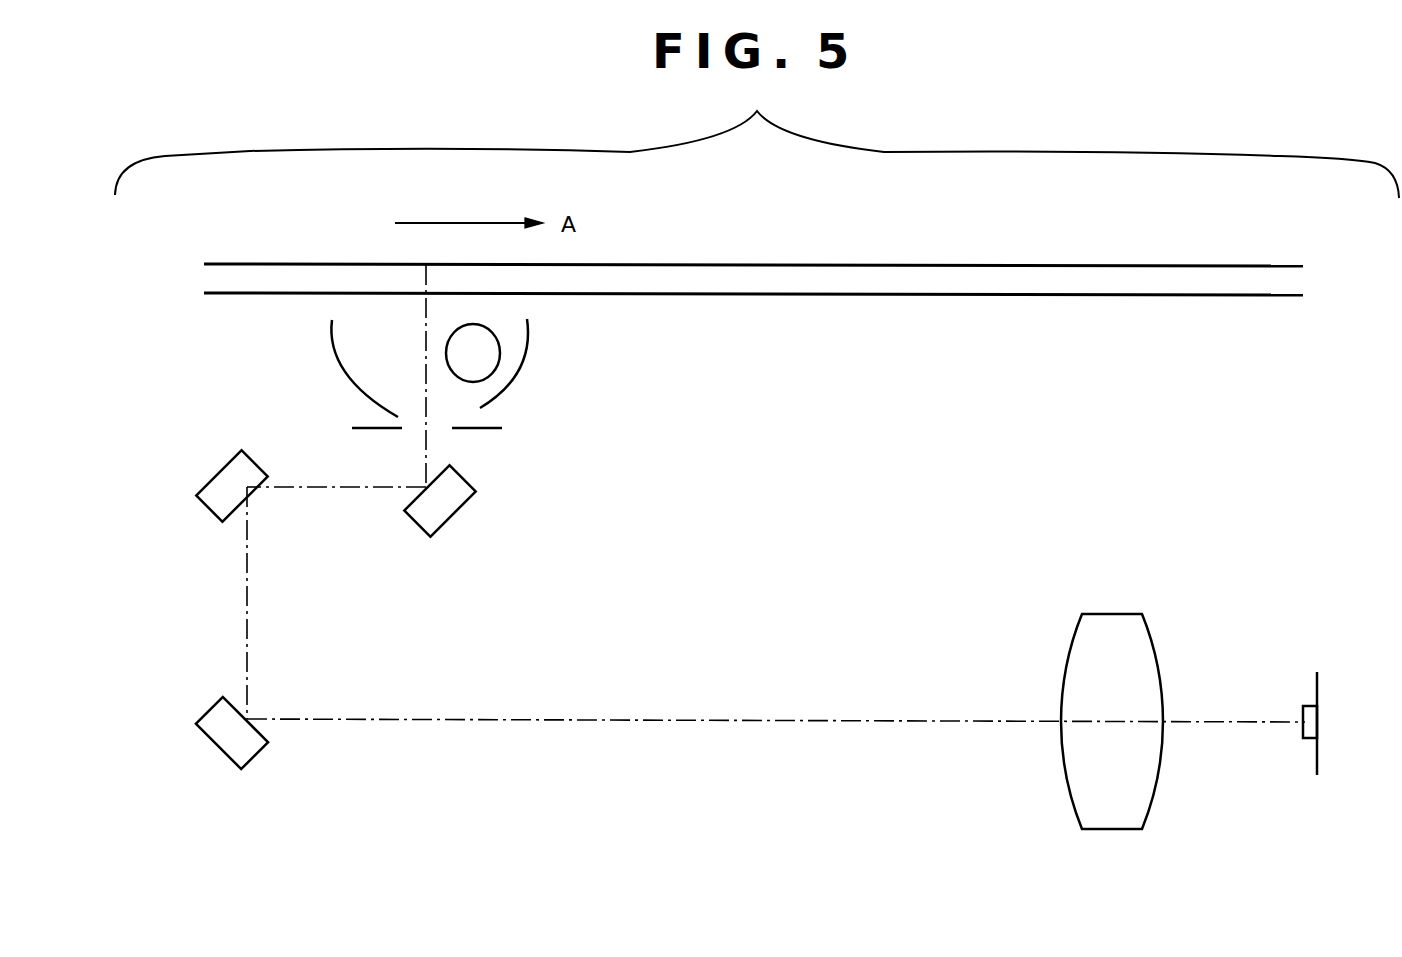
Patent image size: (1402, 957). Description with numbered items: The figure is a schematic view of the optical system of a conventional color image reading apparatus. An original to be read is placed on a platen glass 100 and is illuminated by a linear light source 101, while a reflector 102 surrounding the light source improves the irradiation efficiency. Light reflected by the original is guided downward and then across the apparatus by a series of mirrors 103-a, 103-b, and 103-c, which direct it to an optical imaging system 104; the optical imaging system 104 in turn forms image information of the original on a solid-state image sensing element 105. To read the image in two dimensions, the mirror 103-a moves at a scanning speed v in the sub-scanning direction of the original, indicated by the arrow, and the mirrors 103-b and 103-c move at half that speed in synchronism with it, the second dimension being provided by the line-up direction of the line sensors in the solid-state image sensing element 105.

The platen glass 100 is at (878, 283).
The linear light source 101 is at (490, 365).
The reflector 102 is at (347, 372).
The mirror 103-a is at (446, 511).
The mirror 103-b is at (227, 482).
The mirror 103-c is at (228, 728).
The optical imaging system 104 is at (1065, 773).
The solid-state image sensing element 105 is at (1305, 740).